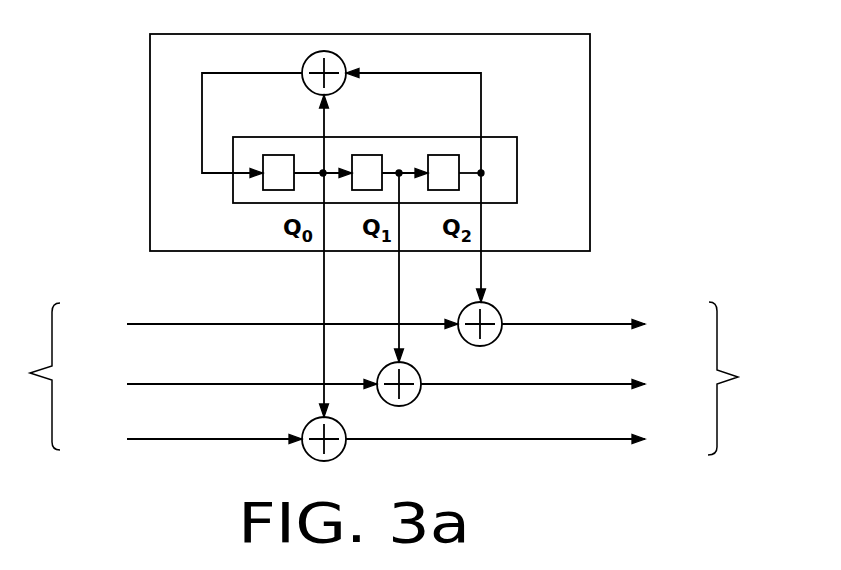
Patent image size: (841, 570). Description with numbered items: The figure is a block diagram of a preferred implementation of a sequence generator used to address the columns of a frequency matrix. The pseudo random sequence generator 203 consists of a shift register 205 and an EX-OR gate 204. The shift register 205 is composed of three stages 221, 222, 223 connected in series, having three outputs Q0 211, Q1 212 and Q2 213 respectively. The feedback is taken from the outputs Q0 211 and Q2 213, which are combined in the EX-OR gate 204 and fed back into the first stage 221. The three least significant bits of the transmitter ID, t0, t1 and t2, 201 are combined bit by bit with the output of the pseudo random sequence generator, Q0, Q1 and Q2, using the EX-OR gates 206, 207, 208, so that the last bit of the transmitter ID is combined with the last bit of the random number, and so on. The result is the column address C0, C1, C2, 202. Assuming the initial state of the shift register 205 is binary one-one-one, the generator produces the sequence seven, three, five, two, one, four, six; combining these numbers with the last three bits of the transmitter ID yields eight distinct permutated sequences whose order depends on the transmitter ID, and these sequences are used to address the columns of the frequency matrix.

The three least significant bits of the transmitter ID 201 is at (53, 300).
The column address 202 is at (715, 300).
The pseudo random sequence generator 203 is at (150, 97).
The EX-OR gate 204 is at (302, 67).
The shift register 205 is at (505, 137).
The EX-OR gate 206 is at (342, 452).
The EX-OR gate 207 is at (417, 395).
The EX-OR gate 208 is at (497, 337).
The output Q0 211 is at (325, 262).
The output Q1 212 is at (399, 262).
The output Q2 213 is at (482, 262).
The first stage 221 is at (283, 155).
The second stage 222 is at (372, 155).
The third stage 223 is at (443, 155).